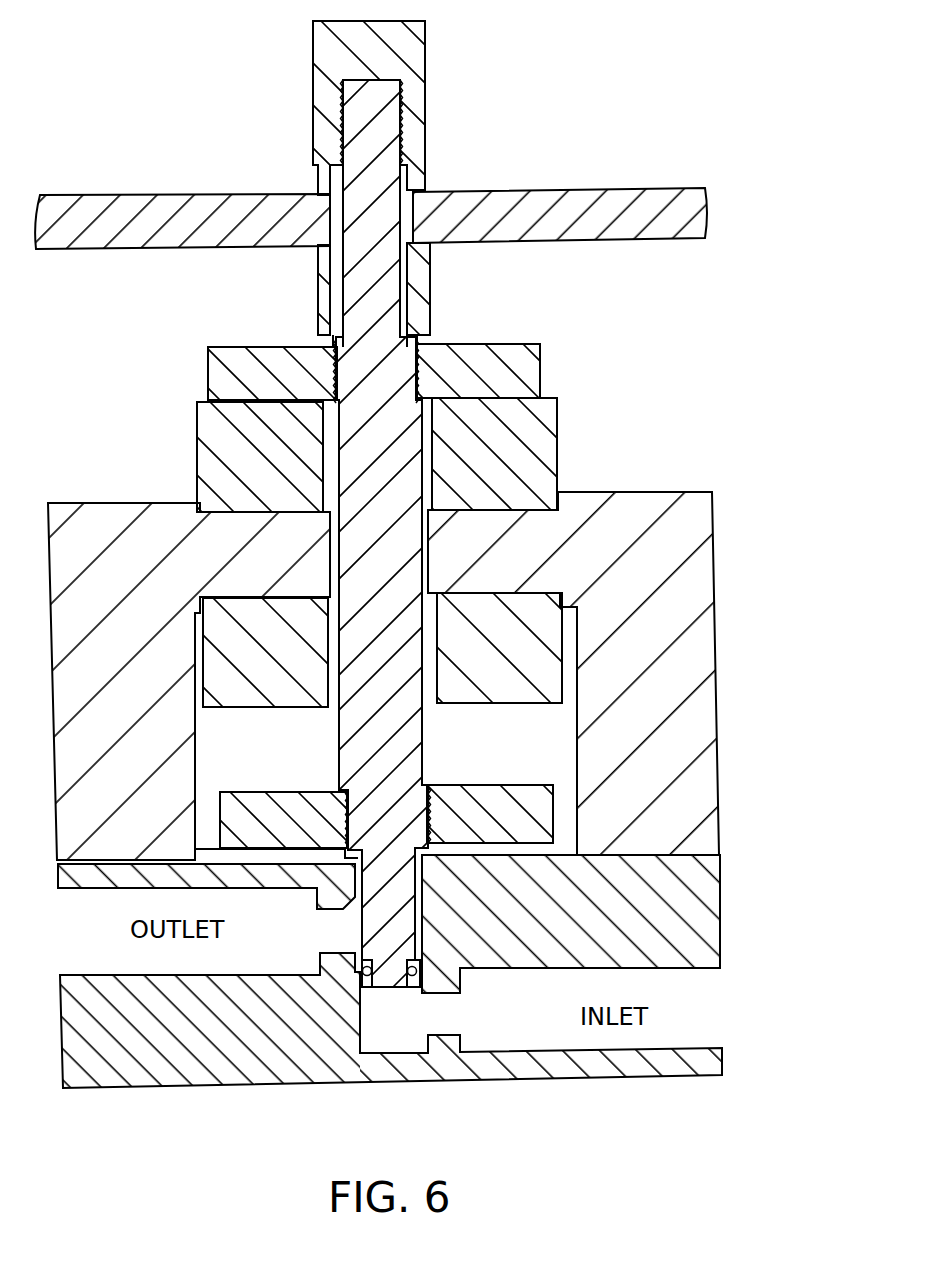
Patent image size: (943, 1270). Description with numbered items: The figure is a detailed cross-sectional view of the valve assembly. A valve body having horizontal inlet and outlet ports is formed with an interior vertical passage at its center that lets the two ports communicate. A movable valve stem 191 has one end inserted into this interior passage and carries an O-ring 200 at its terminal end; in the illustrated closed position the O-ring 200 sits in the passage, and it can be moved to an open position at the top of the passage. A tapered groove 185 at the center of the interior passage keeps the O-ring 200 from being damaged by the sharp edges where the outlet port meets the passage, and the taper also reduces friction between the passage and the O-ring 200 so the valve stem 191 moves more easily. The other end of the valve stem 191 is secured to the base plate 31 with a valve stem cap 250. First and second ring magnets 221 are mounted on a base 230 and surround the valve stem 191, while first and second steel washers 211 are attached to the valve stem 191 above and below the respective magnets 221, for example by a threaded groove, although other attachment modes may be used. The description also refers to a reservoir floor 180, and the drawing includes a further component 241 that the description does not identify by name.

The base plate 31 is at (172, 208).
The reservoir floor 180 is at (690, 890).
The tapered groove 185 is at (397, 903).
The valve stem 191 is at (397, 587).
The O-ring 200 is at (367, 983).
The steel washers 211 is at (530, 375).
The ring magnets 221 is at (548, 447).
The base 230 is at (693, 572).
The sleeve 241 is at (432, 290).
The valve stem cap 250 is at (426, 66).